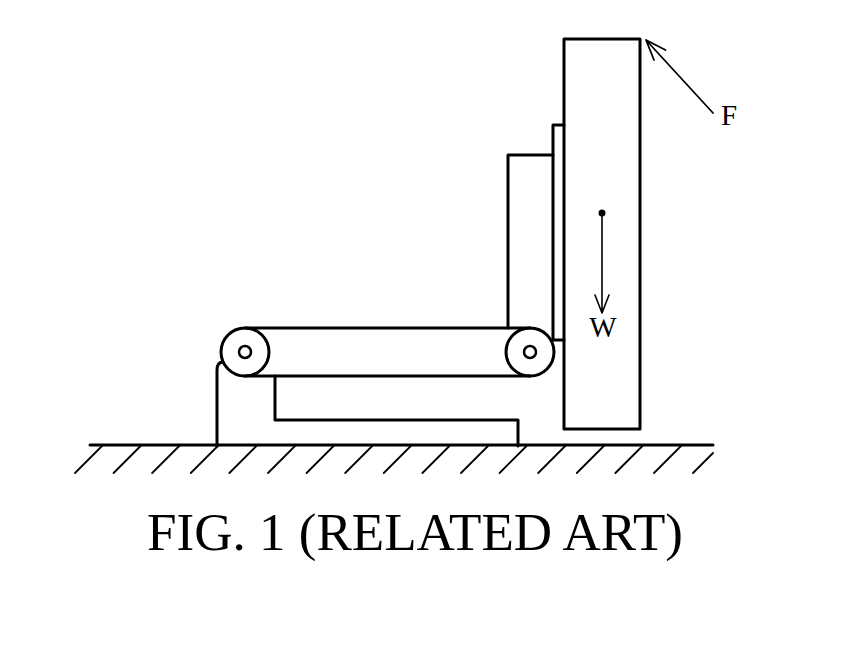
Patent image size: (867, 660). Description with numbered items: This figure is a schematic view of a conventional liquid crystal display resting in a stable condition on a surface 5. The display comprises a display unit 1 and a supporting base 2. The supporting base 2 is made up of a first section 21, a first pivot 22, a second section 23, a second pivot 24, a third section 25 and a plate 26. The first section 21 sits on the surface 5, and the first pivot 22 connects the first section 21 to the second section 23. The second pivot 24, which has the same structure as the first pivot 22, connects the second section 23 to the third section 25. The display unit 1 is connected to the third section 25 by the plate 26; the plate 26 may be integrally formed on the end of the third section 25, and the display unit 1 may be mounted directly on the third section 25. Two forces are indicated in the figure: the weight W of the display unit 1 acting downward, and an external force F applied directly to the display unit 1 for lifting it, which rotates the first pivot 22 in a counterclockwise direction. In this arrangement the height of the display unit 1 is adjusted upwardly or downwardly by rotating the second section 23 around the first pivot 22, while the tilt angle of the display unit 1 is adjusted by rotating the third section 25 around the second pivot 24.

The display unit 1 is at (641, 225).
The supporting base 2 is at (178, 228).
The first section 21 is at (227, 397).
The first pivot 22 is at (245, 327).
The second section 23 is at (333, 336).
The second pivot 24 is at (523, 330).
The third section 25 is at (515, 232).
The plate 26 is at (552, 133).
The surface 5 is at (119, 445).